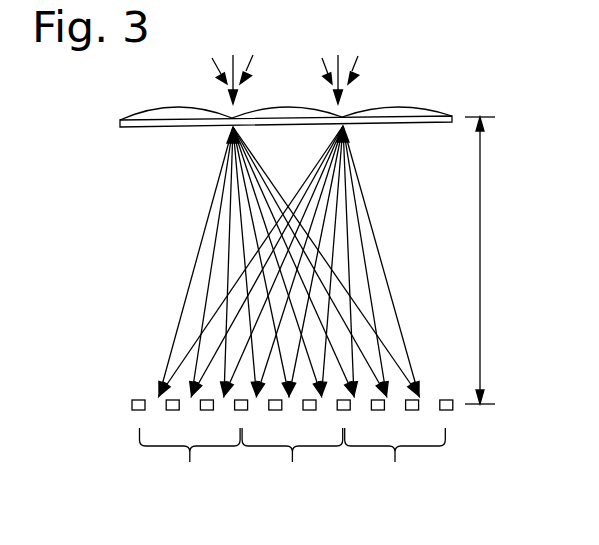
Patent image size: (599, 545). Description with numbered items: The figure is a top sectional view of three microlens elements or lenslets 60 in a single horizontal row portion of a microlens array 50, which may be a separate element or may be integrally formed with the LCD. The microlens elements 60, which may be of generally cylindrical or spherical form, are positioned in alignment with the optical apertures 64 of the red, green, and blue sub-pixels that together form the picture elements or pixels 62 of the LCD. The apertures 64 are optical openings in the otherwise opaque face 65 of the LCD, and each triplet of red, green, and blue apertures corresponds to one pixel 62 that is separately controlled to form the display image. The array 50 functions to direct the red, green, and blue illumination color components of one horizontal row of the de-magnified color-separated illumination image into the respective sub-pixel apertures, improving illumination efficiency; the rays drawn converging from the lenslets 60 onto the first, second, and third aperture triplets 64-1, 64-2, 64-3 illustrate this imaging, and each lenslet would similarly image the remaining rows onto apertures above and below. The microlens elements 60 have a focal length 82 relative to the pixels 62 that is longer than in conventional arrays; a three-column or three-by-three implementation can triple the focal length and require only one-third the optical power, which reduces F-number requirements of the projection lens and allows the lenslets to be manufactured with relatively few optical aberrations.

The microlens array 50 is at (445, 76).
The microlens element 60 is at (172, 110).
The focal length 82 is at (480, 237).
The optical aperture 64 is at (150, 398).
The opaque face 65 is at (132, 403).
The pixel 62 is at (293, 456).
The first aperture triplet 64-1 is at (250, 462).
The second aperture triplet 64-2 is at (133, 420).
The third aperture triplet 64-3 is at (444, 416).